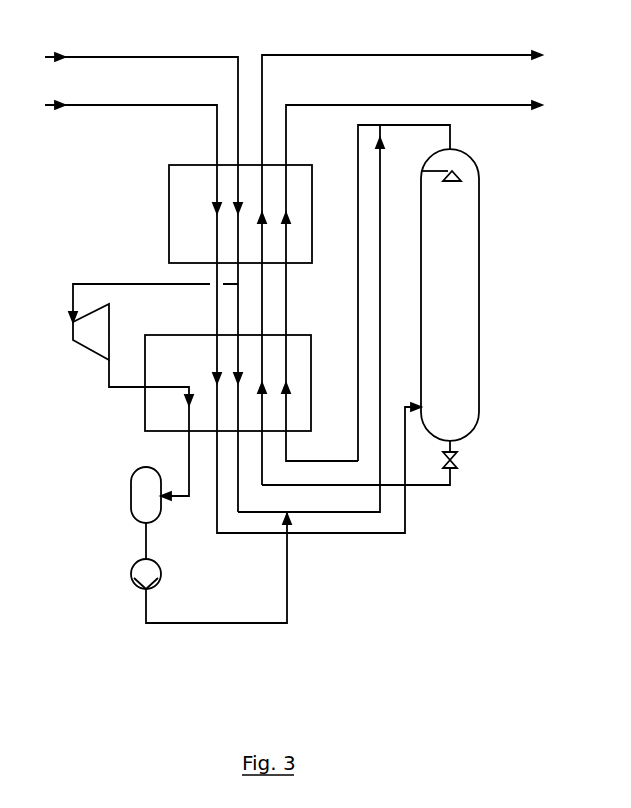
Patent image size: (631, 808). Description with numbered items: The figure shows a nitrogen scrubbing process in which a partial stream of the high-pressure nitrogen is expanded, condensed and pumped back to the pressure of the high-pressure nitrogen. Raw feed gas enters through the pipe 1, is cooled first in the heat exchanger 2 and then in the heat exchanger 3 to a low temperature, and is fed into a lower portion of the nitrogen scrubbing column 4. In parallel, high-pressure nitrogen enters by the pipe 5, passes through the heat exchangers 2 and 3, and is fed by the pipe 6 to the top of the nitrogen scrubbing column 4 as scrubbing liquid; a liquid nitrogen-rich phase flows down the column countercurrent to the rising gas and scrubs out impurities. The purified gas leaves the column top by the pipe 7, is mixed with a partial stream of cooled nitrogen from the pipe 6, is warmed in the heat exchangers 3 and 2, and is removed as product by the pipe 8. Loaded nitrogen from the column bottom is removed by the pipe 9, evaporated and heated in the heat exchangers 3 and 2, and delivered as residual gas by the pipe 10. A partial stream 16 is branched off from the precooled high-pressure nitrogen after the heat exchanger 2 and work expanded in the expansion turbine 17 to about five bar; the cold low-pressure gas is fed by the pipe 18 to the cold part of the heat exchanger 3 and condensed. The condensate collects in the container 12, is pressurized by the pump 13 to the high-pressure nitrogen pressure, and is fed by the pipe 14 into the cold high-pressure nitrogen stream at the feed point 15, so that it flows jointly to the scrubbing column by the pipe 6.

The pipe 1 is at (89, 105).
The heat exchanger 2 is at (169, 218).
The heat exchanger 3 is at (145, 422).
The nitrogen scrubbing column 4 is at (480, 308).
The pipe 5 is at (87, 57).
The pipe 6 is at (382, 306).
The pipe 7 is at (450, 133).
The pipe 8 is at (484, 105).
The pipe 9 is at (452, 482).
The pipe 10 is at (494, 55).
The container 12 is at (131, 503).
The pump 13 is at (134, 582).
The pipe 14 is at (289, 596).
The feed point 15 is at (287, 516).
The partial stream 16 is at (120, 284).
The expansion turbine 17 is at (84, 350).
The pipe 18 is at (118, 390).